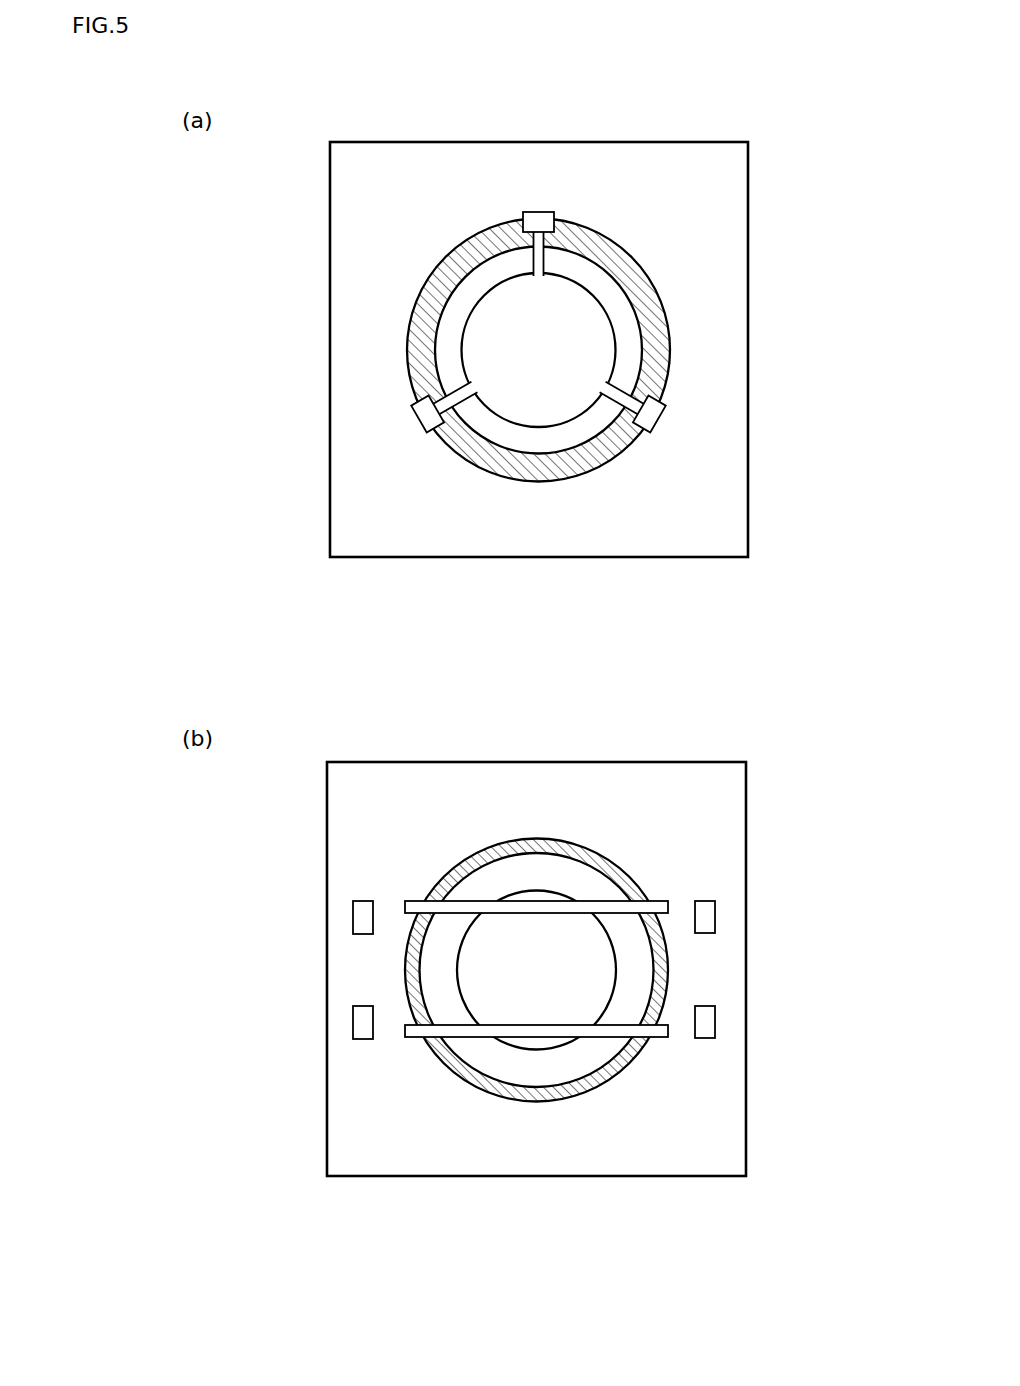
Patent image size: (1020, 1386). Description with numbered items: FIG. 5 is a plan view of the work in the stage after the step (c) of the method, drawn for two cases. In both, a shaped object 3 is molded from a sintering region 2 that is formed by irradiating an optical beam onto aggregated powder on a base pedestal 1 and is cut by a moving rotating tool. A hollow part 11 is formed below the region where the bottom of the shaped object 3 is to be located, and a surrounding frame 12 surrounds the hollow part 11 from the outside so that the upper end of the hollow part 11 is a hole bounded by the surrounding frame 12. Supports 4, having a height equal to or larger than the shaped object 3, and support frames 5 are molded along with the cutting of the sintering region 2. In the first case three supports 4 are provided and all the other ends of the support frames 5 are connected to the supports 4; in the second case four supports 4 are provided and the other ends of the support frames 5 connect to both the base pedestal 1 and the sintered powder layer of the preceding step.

The base pedestal 1 is at (808, 240).
The sintering region 2 is at (583, 1220).
The shaped object 3 is at (547, 398).
The support 4 is at (541, 212).
The support frame 5 is at (522, 230).
The hollow part 11 is at (605, 285).
The surrounding frame 12 is at (680, 197).